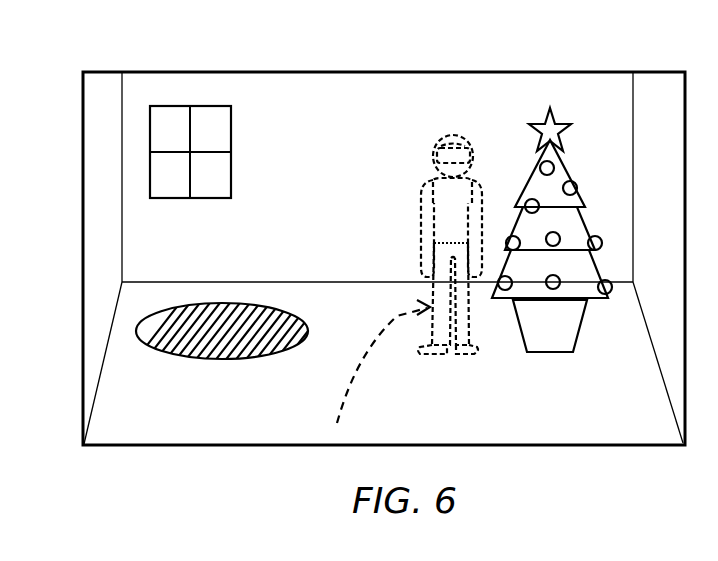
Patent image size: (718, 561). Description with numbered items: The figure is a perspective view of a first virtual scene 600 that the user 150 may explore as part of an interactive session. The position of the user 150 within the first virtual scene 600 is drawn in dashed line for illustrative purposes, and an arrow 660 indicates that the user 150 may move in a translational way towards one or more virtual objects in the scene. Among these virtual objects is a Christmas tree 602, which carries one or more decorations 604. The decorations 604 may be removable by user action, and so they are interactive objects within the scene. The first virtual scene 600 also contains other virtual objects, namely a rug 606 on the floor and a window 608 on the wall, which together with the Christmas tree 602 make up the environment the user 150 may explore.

The first virtual scene 600 is at (181, 47).
The window 608 is at (218, 129).
The rug 606 is at (292, 312).
The user 150 is at (432, 188).
The arrow 660 is at (353, 379).
The Christmas tree 602 is at (558, 152).
The decorations 604 is at (543, 172).